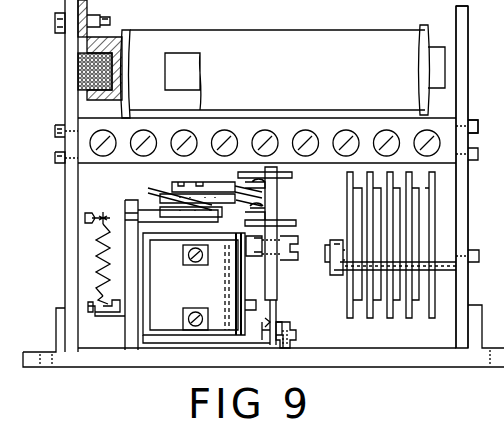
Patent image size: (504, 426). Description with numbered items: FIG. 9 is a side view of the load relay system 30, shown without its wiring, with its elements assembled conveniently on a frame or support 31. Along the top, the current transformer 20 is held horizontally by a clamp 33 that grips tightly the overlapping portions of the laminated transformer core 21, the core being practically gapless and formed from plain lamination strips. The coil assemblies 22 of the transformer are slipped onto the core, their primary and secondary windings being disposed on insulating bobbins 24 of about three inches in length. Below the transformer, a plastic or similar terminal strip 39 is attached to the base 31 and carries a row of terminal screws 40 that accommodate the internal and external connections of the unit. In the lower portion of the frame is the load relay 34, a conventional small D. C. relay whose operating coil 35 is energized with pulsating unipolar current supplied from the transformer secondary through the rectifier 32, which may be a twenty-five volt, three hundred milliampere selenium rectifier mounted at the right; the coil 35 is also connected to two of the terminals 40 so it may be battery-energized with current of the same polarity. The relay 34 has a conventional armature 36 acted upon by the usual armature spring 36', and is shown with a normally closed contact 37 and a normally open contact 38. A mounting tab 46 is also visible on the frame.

The current transformer 20 is at (274, 26).
The transformer core 21 is at (82, 72).
The coil assemblies 22 is at (340, 45).
The insulating bobbins 24 is at (425, 28).
The load relay system 30 is at (49, 215).
The frame or support 31 is at (462, 88).
The rectifier 32 is at (430, 305).
The clamp 33 is at (112, 42).
The load relay 34 is at (295, 302).
The operating coil 35 is at (215, 308).
The armature 36 is at (168, 264).
The armature spring 36' is at (76, 264).
The normally closed contact 37 is at (266, 188).
The normally open contact 38 is at (266, 210).
The terminal strip 39 is at (358, 130).
The terminal screws 40 is at (304, 130).
The mounting tab 46 is at (486, 127).